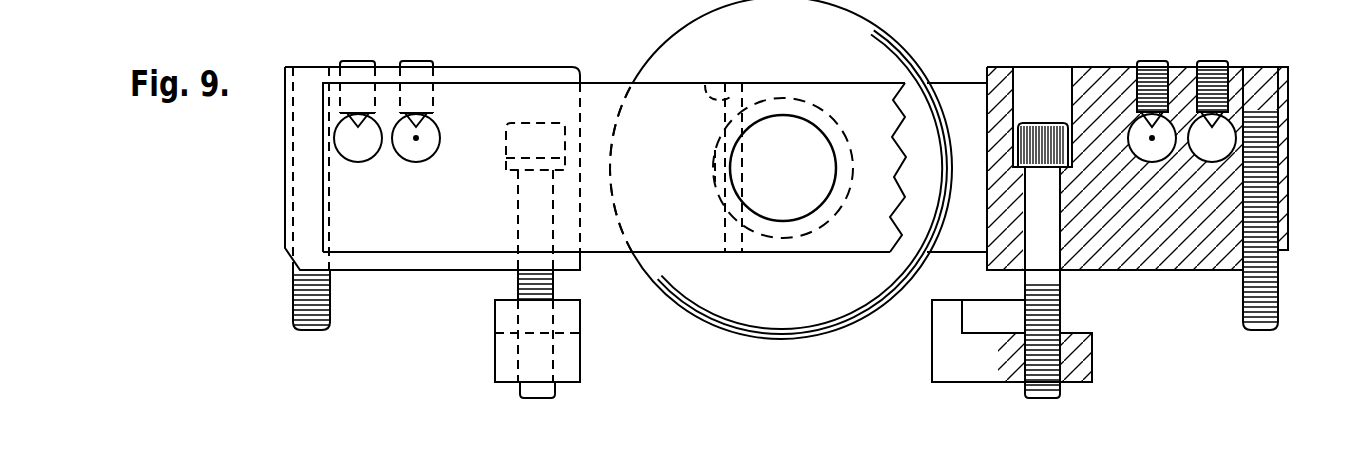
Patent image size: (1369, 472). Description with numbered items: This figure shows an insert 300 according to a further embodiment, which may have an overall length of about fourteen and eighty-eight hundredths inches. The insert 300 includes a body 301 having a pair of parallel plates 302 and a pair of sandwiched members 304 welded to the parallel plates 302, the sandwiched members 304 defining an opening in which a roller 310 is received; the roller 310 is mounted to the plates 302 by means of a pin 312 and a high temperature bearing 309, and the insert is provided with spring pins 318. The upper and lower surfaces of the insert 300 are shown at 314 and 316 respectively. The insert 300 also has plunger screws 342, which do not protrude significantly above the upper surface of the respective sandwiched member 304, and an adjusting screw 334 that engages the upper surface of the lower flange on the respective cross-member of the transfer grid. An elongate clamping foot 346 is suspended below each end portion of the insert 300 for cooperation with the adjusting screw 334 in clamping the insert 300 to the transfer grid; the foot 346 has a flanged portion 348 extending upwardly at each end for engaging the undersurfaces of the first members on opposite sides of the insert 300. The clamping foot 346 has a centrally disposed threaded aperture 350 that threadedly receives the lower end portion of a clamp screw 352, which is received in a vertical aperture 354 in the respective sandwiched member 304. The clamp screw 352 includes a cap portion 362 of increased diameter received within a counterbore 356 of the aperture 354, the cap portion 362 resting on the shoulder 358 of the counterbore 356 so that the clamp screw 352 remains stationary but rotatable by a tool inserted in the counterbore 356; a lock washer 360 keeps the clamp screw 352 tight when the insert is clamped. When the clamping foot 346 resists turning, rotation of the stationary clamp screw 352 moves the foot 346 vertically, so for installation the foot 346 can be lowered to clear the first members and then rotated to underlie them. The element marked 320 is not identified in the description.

The insert 300 is at (668, 318).
The body 301 is at (612, 257).
The parallel plates 302 is at (608, 85).
The sandwiched members 304 is at (488, 68).
The high temperature bearing 309 is at (838, 86).
The roller 310 is at (800, 322).
The pin 312 is at (797, 152).
The upper surface 314 is at (1236, 66).
The lower surface 316 is at (392, 272).
The spring pins 318 is at (716, 70).
The bore 320 is at (741, 86).
The adjusting screw 334 is at (292, 298).
The plunger screws 342 is at (1215, 22).
The clamping foot 346 is at (495, 358).
The flanged portion 348 is at (578, 312).
The threaded aperture 350 is at (1025, 385).
The clamp screw 352 is at (518, 285).
The vertical aperture 354 is at (1050, 222).
The counterbore 356 is at (1030, 30).
The shoulder 358 is at (1025, 166).
The lock washer 360 is at (1050, 170).
The cap portion 362 is at (1038, 124).